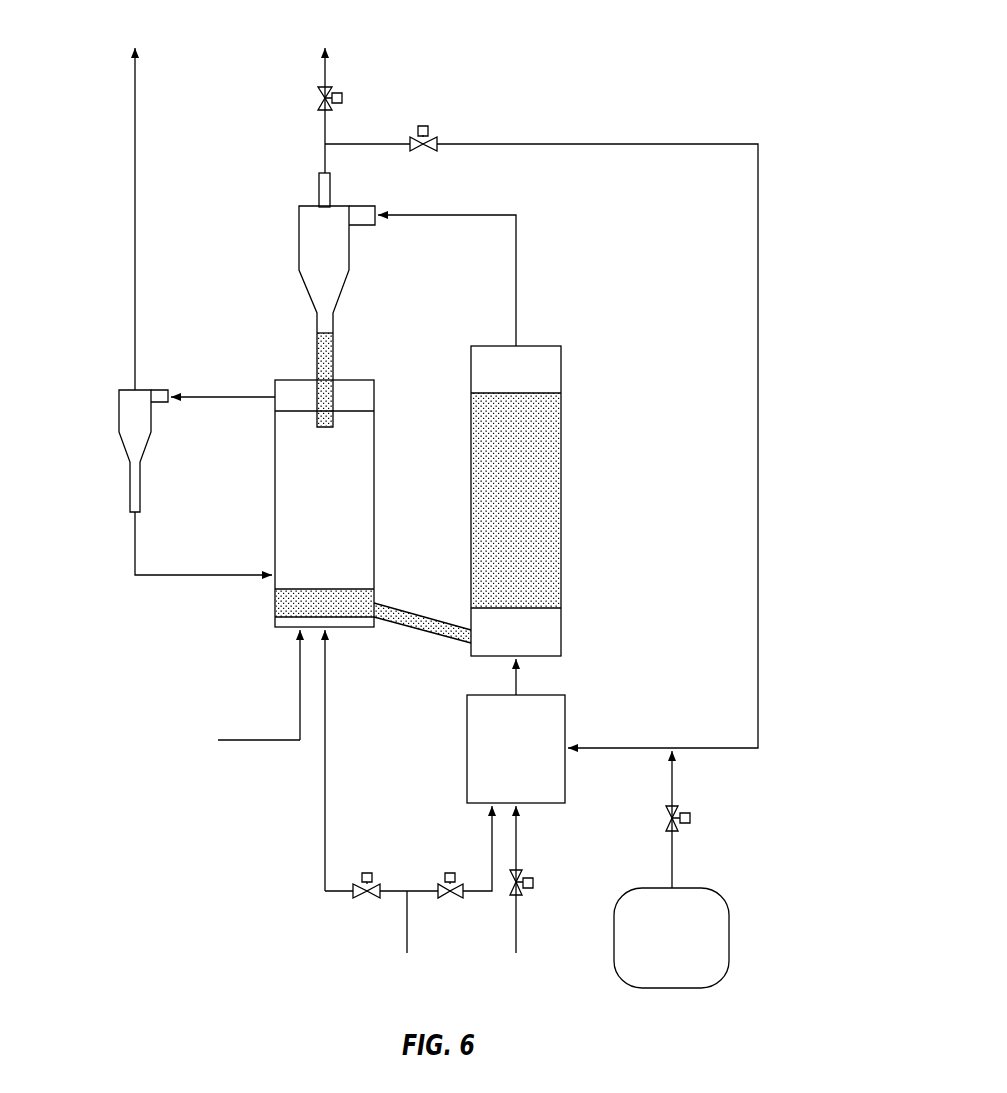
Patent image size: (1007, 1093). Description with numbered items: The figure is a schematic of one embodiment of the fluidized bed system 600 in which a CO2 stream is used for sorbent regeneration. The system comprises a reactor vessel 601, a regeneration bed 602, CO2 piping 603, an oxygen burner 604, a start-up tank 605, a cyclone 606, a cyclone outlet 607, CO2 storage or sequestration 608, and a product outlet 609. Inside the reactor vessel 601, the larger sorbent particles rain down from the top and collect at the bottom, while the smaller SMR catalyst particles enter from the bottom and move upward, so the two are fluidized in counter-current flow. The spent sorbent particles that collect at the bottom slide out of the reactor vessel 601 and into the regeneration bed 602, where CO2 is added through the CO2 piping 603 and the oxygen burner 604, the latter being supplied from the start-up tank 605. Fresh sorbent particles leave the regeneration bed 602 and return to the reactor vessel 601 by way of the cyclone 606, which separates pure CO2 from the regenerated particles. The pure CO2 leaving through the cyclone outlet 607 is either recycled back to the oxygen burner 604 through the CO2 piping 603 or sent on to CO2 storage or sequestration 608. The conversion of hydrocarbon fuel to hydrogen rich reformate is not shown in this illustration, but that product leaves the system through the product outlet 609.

The fluidized bed system 600 is at (764, 58).
The reactor vessel 601 is at (275, 497).
The regeneration bed 602 is at (562, 500).
The CO2 piping 603 is at (760, 446).
The oxygen burner 604 is at (567, 713).
The start-up tank 605 is at (731, 938).
The cyclone 606 is at (299, 238).
The cyclone outlet 607 is at (318, 193).
The CO2 storage or sequestration 608 is at (325, 75).
The product outlet 609 is at (135, 218).